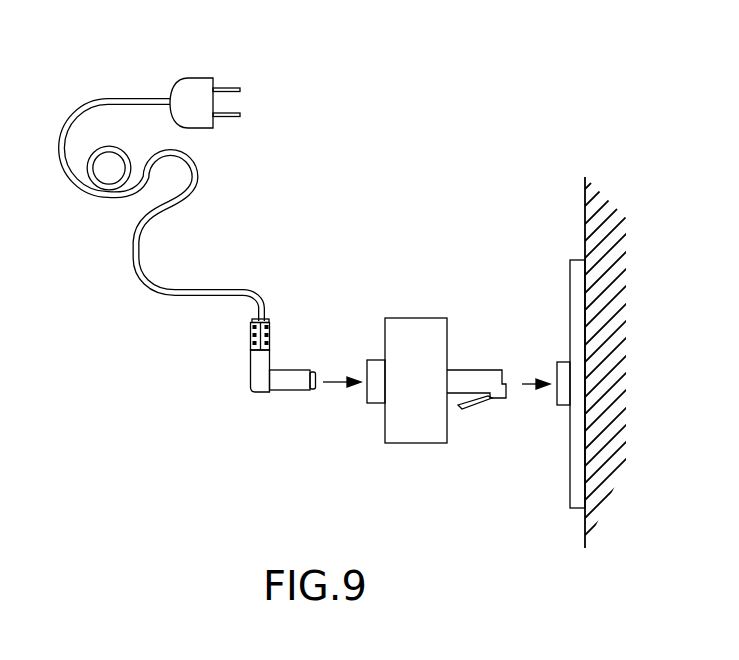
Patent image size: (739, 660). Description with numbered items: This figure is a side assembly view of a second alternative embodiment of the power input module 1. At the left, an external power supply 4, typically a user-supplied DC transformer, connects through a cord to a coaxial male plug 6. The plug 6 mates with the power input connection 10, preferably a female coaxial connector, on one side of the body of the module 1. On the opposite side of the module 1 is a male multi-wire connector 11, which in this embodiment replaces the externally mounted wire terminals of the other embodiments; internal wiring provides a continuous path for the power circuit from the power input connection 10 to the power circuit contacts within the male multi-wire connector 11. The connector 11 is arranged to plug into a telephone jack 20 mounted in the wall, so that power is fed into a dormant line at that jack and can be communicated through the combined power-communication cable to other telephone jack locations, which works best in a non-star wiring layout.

The external power supply 4 is at (190, 96).
The coaxial male plug 6 is at (296, 385).
The power input module 1 is at (403, 327).
The power input connection 10 is at (367, 404).
The male multi-wire connector 11 is at (479, 370).
The telephone jack 20 is at (570, 472).